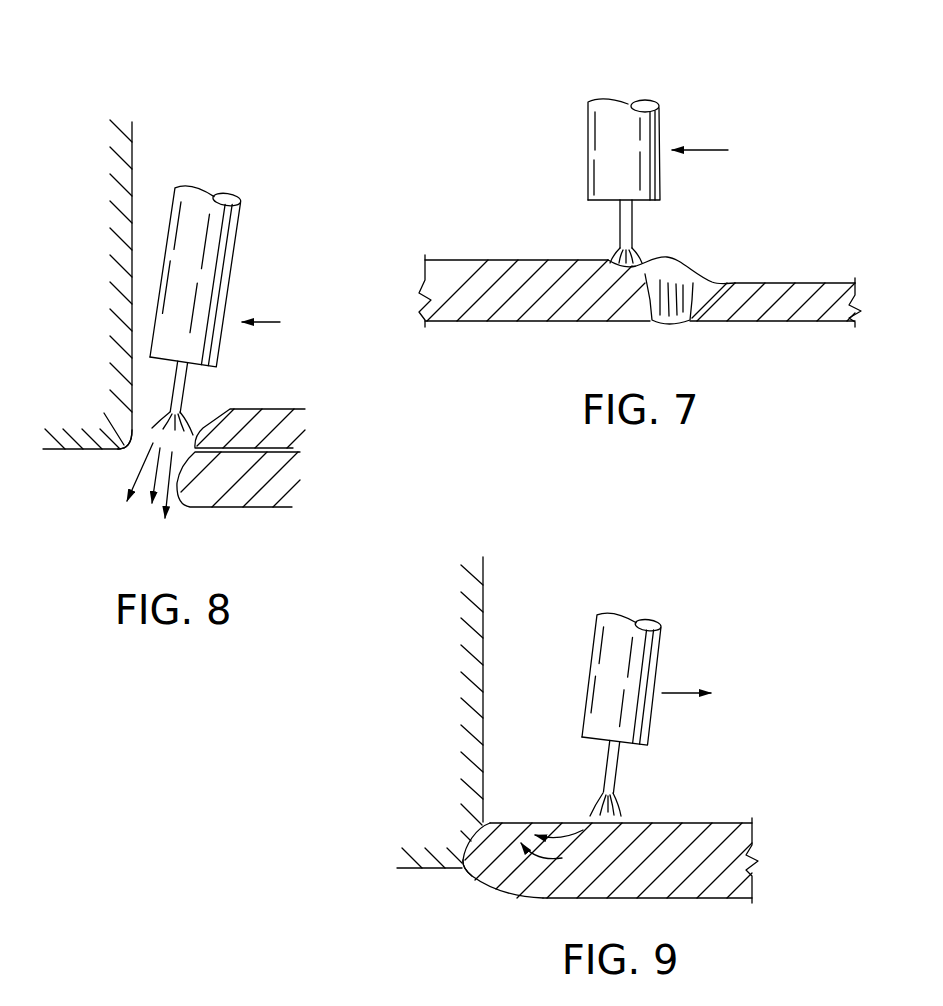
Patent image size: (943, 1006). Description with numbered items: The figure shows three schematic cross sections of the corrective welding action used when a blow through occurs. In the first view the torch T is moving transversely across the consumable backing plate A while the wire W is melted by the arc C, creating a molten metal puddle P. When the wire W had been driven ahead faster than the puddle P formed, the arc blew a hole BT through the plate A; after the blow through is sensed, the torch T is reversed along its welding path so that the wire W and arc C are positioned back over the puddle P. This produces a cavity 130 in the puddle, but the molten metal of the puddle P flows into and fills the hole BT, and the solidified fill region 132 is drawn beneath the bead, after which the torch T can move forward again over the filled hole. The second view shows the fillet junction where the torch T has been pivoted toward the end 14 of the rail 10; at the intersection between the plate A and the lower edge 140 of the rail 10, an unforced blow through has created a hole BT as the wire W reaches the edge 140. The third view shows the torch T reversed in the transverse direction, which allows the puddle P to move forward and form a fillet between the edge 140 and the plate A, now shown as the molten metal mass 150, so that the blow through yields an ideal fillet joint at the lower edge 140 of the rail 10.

In FIG. 8, the rail 10 is at (130, 271).
In FIG. 9, the rail 10 is at (481, 704).
In FIG. 8, the end of rail 14 is at (134, 170).
In FIG. 9, the end of rail 14 is at (485, 632).
In FIG. 7, the torch T is at (665, 116).
In FIG. 8, the torch T is at (239, 250).
In FIG. 9, the torch T is at (667, 647).
In FIG. 7, the wire W is at (623, 227).
In FIG. 8, the wire W is at (176, 380).
In FIG. 9, the wire W is at (610, 760).
In FIG. 7, the arc C is at (613, 256).
In FIG. 8, the arc C is at (193, 423).
In FIG. 9, the arc C is at (619, 806).
In FIG. 7, the molten metal puddle P is at (491, 255).
In FIG. 8, the molten metal puddle P is at (293, 402).
In FIG. 7, the backing plate A is at (799, 326).
In FIG. 8, the backing plate A is at (266, 509).
In FIG. 7, the hole BT is at (711, 286).
In FIG. 8, the hole BT is at (178, 477).
In FIG. 7, the cavity 130 is at (637, 258).
In FIG. 7, the weld nugget 132 is at (669, 297).
In FIG. 8, the edge 140 is at (121, 447).
In FIG. 9, the edge 140 is at (458, 872).
In FIG. 9, the molten metal mass 150 is at (695, 825).